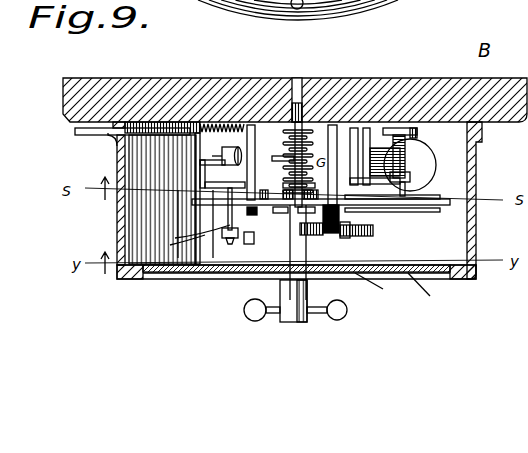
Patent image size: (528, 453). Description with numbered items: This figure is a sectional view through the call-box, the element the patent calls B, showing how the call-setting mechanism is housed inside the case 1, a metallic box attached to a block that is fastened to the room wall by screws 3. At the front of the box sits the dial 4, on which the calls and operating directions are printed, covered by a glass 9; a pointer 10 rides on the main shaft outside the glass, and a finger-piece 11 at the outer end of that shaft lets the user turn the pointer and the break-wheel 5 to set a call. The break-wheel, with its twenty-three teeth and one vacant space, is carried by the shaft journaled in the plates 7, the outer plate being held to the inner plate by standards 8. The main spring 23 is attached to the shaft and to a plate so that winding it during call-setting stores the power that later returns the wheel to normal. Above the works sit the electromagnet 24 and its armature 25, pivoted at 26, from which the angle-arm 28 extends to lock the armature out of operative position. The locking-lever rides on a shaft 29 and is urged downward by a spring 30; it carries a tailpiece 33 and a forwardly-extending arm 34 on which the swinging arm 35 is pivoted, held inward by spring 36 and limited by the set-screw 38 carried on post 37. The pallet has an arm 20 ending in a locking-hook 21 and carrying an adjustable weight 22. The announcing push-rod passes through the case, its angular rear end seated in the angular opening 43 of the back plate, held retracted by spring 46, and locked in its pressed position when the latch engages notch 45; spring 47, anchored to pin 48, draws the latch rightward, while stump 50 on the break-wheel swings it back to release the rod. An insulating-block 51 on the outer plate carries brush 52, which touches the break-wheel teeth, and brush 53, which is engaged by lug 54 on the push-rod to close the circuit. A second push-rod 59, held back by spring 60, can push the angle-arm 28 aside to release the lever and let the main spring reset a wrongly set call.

The case 1 is at (477, 166).
The screws 3 is at (302, 6).
The dial 4 is at (401, 264).
The break-wheel 5 is at (262, 272).
The plates 7 is at (333, 125).
The standards 8 is at (283, 150).
The glass 9 is at (195, 279).
The pointer 10 is at (318, 281).
The finger-piece 11 is at (245, 312).
The arm 20 is at (288, 172).
The locking-hook 21 is at (200, 170).
The weight 22 is at (226, 153).
The main spring 23 is at (213, 198).
The electromagnet 24 is at (417, 167).
The armature 25 is at (385, 162).
The pivot 26 is at (392, 216).
The angle-arm 28 is at (358, 160).
The shaft 29 is at (425, 202).
The spring 30 is at (412, 136).
The tailpiece 33 is at (205, 195).
The arm 34 is at (202, 227).
The swinging arm 35 is at (188, 243).
The spring 36 is at (222, 245).
The post 37 is at (245, 208).
The set-screw 38 is at (262, 240).
The angular opening 43 is at (297, 78).
The notch 45 is at (300, 226).
The spring 46 is at (288, 135).
The spring 47 is at (332, 233).
The pin 48 is at (346, 238).
The stump 50 is at (378, 287).
The insulating-block 51 is at (426, 290).
The brush 52 is at (374, 230).
The brush 53 is at (298, 299).
The lug 54 is at (297, 252).
The push-rod 59 is at (95, 135).
The spring 60 is at (200, 144).